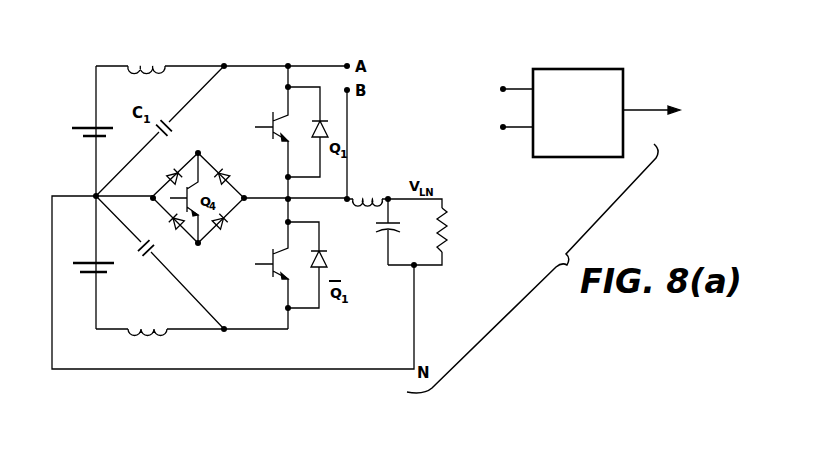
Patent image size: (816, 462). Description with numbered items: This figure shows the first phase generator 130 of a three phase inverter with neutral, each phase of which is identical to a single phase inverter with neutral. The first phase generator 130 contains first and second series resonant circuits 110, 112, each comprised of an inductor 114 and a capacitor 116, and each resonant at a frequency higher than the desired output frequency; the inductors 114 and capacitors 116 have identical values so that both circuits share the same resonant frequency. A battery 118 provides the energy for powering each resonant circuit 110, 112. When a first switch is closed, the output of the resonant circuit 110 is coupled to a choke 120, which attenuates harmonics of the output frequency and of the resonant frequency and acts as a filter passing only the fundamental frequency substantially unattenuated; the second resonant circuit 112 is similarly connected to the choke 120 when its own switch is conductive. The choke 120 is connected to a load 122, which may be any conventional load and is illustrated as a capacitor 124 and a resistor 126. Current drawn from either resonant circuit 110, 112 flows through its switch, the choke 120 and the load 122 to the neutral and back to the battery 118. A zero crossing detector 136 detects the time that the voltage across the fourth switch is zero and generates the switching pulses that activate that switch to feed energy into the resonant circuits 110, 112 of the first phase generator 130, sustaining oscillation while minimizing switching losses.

The first series resonant circuit 110 is at (124, 55).
The second series resonant circuit 112 is at (110, 345).
The inductor 114 is at (166, 62).
The capacitor 116 is at (160, 253).
The battery 118 is at (87, 124).
The choke 120 is at (363, 193).
The load 122 is at (437, 247).
The capacitor 124 is at (386, 236).
The resistor 126 is at (446, 250).
The first phase generator 130 is at (575, 83).
The zero crossing detector 136 is at (626, 82).